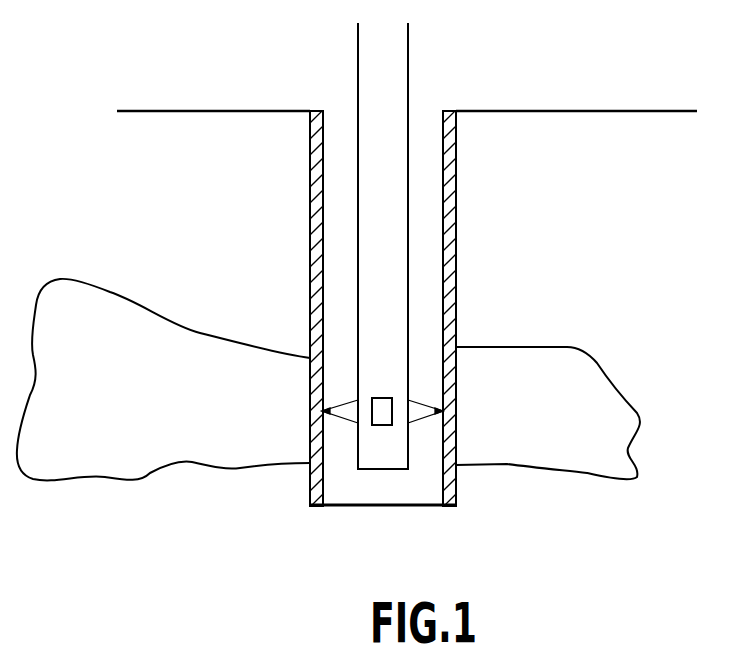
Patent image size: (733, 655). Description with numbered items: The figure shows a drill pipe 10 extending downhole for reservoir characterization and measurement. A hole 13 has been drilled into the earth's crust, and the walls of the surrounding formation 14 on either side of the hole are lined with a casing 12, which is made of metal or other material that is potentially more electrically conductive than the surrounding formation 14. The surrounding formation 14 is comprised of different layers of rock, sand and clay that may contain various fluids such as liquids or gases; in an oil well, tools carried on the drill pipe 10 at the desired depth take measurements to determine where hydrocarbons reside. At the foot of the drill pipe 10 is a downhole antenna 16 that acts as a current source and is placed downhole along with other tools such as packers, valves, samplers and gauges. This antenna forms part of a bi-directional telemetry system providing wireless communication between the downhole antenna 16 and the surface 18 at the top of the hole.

The drill pipe 10 is at (390, 53).
The casing 12 is at (446, 145).
The hole 13 is at (338, 165).
The surrounding formation 14 is at (563, 377).
The downhole antenna 16 is at (423, 412).
The surface 18 is at (598, 111).